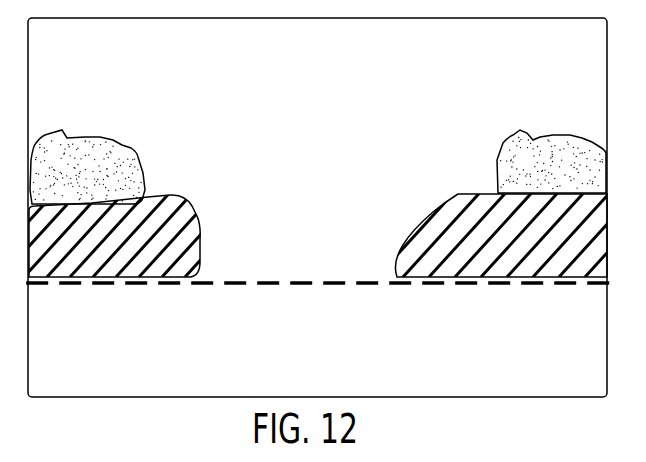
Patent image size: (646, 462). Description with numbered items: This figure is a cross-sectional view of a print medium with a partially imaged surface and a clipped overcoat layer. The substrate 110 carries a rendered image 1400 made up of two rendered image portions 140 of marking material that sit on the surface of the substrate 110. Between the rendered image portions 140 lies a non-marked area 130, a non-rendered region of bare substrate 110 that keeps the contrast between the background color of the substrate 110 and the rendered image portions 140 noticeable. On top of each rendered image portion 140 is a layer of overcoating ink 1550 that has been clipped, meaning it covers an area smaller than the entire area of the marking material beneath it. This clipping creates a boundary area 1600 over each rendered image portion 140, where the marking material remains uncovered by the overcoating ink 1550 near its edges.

The substrate 110 is at (283, 286).
The non-marked area 130 is at (295, 255).
The rendered image portion 140 is at (198, 244).
The rendered image 1400 is at (508, 88).
The overcoating ink 1550 is at (101, 150).
The boundary area 1600 is at (323, 188).